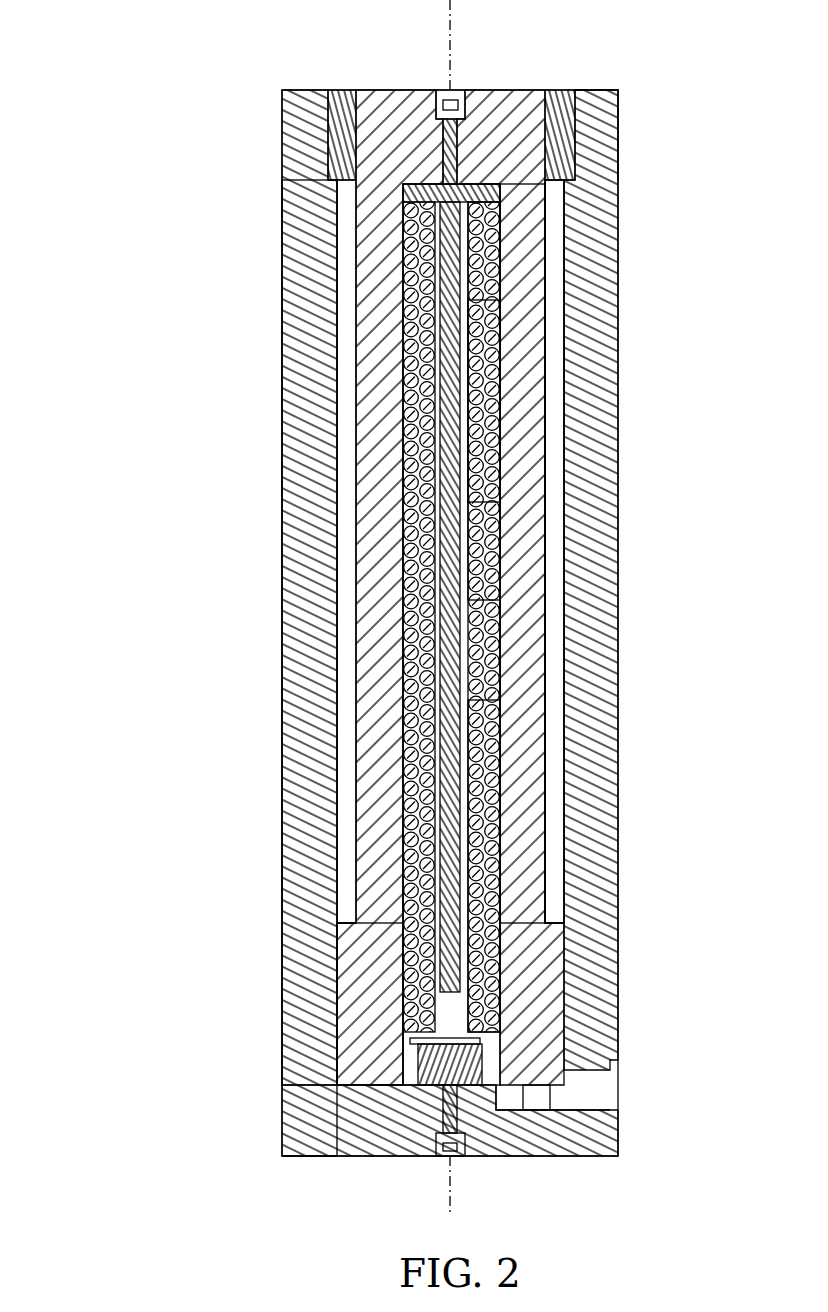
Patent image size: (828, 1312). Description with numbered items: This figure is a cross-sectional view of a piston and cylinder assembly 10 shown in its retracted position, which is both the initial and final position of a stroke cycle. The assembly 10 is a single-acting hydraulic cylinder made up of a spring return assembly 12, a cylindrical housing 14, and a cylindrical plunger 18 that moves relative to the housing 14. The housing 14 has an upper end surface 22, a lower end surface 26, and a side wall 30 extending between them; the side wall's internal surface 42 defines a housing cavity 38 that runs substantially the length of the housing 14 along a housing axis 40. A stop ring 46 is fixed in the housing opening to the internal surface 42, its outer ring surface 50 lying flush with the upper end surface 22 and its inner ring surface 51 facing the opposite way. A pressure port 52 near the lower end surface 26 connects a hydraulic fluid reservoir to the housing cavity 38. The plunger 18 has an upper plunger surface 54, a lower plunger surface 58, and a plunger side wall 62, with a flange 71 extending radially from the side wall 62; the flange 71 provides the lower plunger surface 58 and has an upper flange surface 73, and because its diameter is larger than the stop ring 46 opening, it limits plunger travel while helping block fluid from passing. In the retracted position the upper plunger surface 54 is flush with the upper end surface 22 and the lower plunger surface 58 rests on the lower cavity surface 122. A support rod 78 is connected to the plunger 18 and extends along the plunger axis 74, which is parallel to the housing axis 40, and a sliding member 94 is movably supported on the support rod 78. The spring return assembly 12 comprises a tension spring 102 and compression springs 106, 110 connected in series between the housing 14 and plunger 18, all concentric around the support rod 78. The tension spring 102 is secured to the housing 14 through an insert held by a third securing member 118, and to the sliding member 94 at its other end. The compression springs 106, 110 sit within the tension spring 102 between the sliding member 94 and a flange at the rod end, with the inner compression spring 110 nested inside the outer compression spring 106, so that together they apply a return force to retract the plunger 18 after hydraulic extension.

The piston and cylinder assembly 10 is at (110, 76).
The spring return assembly 12 is at (392, 510).
The housing 14 is at (300, 782).
The plunger 18 is at (517, 602).
The upper end surface 22 is at (308, 90).
The lower end surface 26 is at (318, 1157).
The side wall 30 is at (282, 356).
The housing cavity 38 is at (556, 702).
The housing axis 40 is at (450, 18).
The internal surface 42 is at (567, 535).
The stop ring 46 is at (560, 128).
The outer ring surface 50 is at (560, 90).
The inner ring surface 51 is at (548, 207).
The pressure port 52 is at (600, 1088).
The upper plunger surface 54 is at (403, 90).
The lower plunger surface 58 is at (523, 1090).
The plunger side wall 62 is at (355, 580).
The flange 71 is at (375, 1027).
The upper flange surface 73 is at (347, 923).
The plunger axis 74 is at (447, 762).
The support rod 78 is at (500, 345).
The sliding member 94 is at (405, 215).
The tension spring 102 is at (500, 860).
The outer compression spring 106 is at (500, 402).
The inner compression spring 110 is at (500, 290).
The third securing member 118 is at (463, 1160).
The lower cavity surface 122 is at (367, 1087).